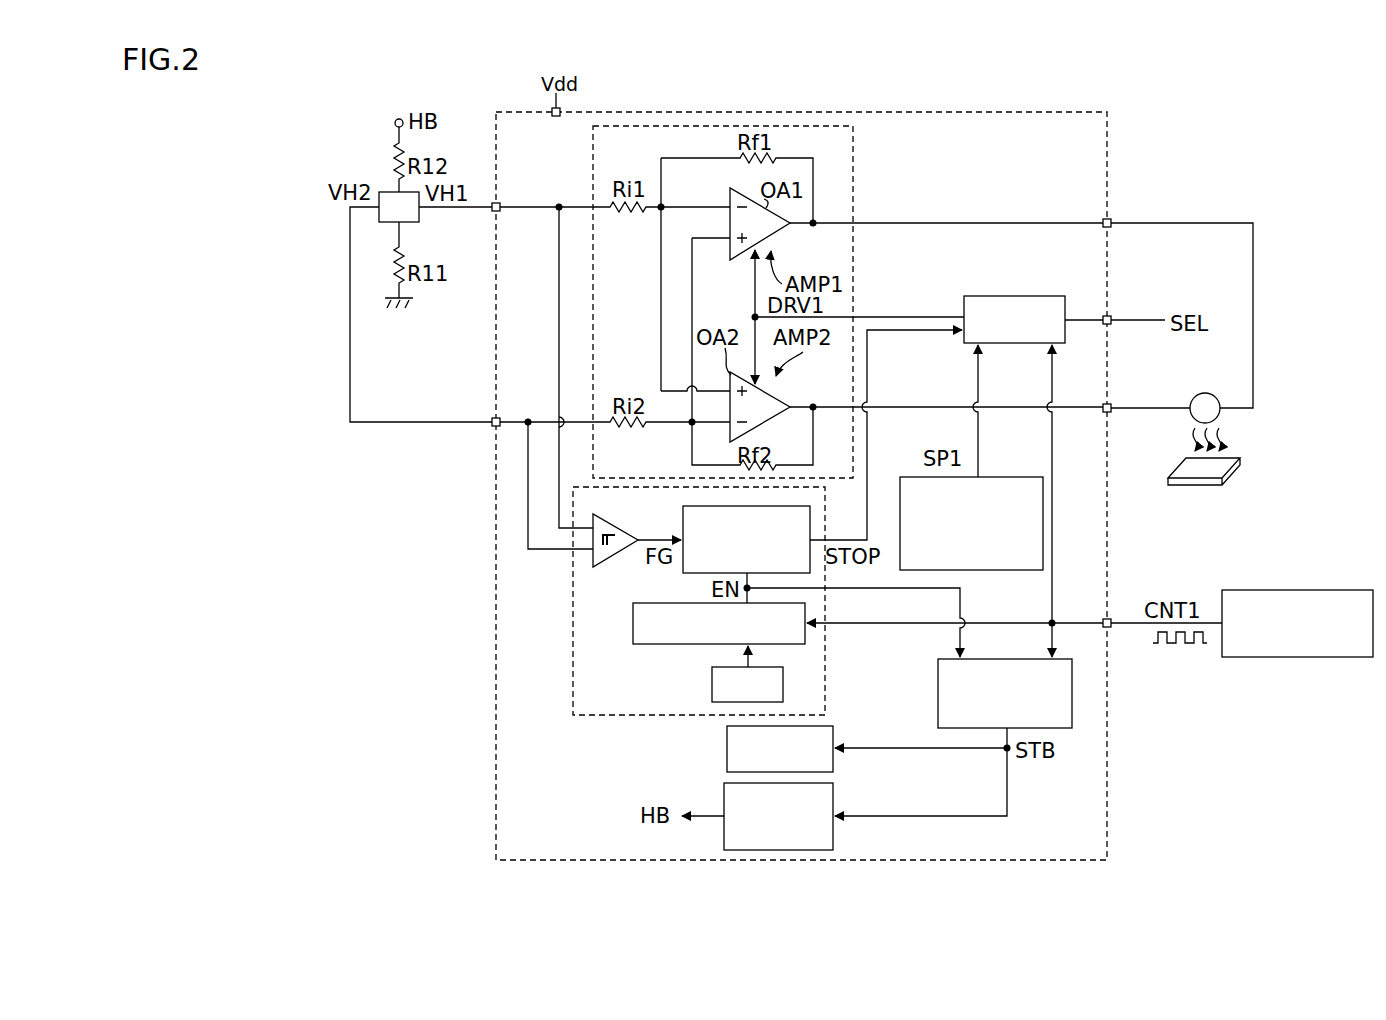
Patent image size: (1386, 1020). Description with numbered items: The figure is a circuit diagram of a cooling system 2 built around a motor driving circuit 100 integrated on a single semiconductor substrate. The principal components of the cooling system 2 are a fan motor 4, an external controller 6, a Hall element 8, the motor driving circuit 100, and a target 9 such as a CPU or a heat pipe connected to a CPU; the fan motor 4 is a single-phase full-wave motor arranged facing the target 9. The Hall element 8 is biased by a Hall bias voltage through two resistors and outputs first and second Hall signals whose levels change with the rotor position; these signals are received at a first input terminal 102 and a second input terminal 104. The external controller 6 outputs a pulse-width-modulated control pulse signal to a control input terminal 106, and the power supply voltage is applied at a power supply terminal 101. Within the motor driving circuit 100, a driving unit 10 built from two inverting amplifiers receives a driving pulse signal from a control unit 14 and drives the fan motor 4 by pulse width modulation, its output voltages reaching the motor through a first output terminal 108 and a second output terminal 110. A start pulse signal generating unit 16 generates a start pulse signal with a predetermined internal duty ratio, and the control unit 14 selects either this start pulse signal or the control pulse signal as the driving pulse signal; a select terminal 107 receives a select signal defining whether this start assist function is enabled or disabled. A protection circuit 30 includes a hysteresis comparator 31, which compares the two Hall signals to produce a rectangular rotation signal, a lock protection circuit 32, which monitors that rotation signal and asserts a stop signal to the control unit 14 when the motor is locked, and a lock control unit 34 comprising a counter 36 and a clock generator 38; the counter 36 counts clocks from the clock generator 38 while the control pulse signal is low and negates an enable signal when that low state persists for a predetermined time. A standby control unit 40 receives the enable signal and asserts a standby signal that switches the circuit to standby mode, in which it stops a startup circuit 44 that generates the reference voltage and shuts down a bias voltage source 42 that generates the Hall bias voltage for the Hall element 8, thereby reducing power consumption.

The cooling system 2 is at (1203, 133).
The fan motor 4 is at (1216, 397).
The external controller 6 is at (1333, 590).
The Hall element 8 is at (419, 216).
The target 9 is at (1229, 459).
The driving unit 10 is at (853, 178).
The control unit 14 is at (1036, 296).
The start pulse signal generating unit 16 is at (1004, 477).
The protection circuit 30 is at (573, 616).
The hysteresis comparator 31 is at (606, 521).
The lock protection circuit 32 is at (684, 528).
The lock control unit 34 is at (622, 645).
The counter 36 is at (683, 644).
The clock generator 38 is at (712, 683).
The standby control unit 40 is at (1055, 660).
The bias voltage source 42 is at (833, 795).
The startup circuit 44 is at (833, 738).
The motor driving circuit 100 is at (1058, 97).
The power supply terminal 101 is at (552, 110).
The first input terminal 102 is at (496, 212).
The second input terminal 104 is at (492, 427).
The control input terminal 106 is at (1110, 629).
The select terminal 107 is at (1111, 326).
The first output terminal 108 is at (1111, 229).
The second output terminal 110 is at (1111, 414).